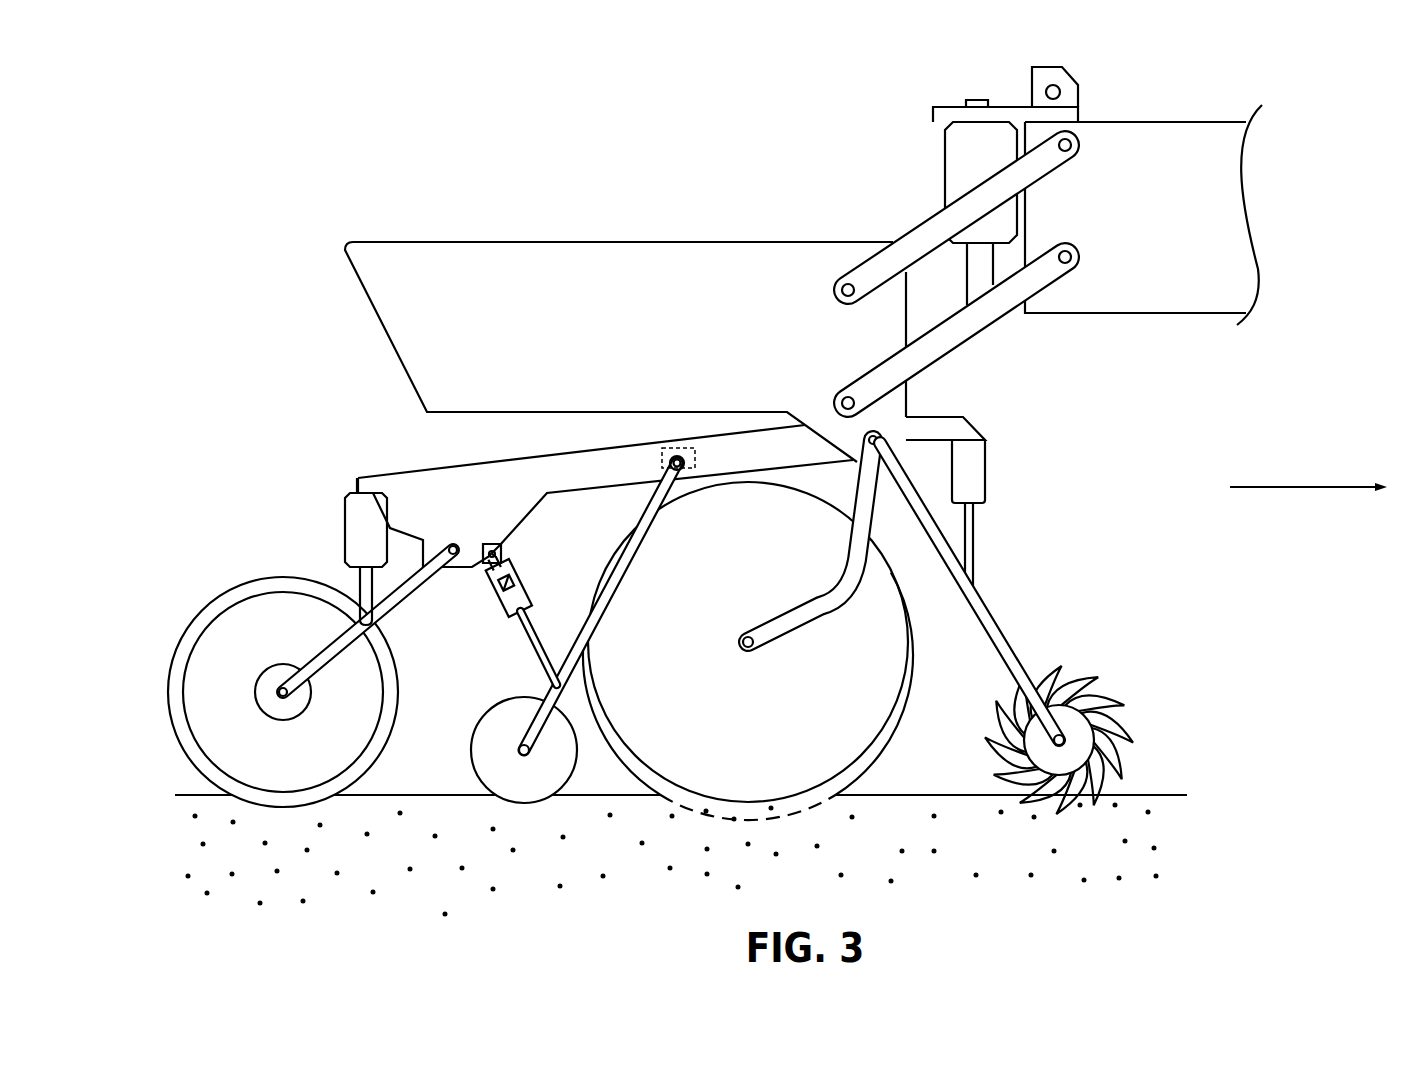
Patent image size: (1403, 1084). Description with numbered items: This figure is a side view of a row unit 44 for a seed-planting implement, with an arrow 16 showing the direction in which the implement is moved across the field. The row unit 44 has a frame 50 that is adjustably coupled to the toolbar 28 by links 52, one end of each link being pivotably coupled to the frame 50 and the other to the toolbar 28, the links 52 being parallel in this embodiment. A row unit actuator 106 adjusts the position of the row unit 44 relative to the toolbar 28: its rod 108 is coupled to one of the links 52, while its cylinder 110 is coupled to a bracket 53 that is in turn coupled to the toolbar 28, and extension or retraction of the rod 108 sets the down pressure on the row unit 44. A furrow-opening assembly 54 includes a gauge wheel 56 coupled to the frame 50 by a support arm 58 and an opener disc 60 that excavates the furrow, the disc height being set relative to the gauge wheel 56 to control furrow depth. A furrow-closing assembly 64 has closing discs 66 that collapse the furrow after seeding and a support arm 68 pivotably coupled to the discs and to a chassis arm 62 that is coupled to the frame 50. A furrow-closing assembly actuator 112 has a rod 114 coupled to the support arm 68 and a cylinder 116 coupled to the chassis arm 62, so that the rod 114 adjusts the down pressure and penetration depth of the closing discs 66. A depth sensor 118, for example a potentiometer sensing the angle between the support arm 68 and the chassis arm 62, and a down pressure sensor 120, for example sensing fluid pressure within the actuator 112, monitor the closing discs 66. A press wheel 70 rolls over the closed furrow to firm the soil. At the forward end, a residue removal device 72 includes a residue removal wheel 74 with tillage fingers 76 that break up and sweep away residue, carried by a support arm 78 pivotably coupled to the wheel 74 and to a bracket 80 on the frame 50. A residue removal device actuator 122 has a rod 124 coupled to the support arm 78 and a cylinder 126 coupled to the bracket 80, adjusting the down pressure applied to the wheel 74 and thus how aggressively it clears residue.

The direction of travel 16 is at (1312, 487).
The toolbar 28 is at (1182, 122).
The row unit 44 is at (378, 147).
The frame 50 is at (628, 242).
The links 52 is at (1050, 170).
The bracket 53 is at (1012, 102).
The furrow-opening assembly 54 is at (774, 669).
The gauge wheel 56 is at (908, 606).
The support arm 58 is at (795, 640).
The opener disc 60 is at (687, 812).
The chassis arm 62 is at (392, 470).
The furrow-closing assembly 64 is at (549, 610).
The closing discs 66 is at (472, 766).
The support arm 68 is at (647, 500).
The press wheel 70 is at (176, 692).
The residue removal device 72 is at (1030, 628).
The residue removal wheel 74 is at (1087, 745).
The fingers 76 is at (1108, 698).
The support arm 78 is at (998, 643).
The bracket 80 is at (952, 416).
The row unit actuator 106 is at (971, 174).
The rod 108 is at (966, 270).
The cylinder 110 is at (943, 142).
The furrow-closing assembly actuator 112 is at (525, 645).
The rod 114 is at (538, 636).
The cylinder 116 is at (521, 582).
The depth sensor 118 is at (676, 446).
The down pressure sensor 120 is at (514, 573).
The residue removal device actuator 122 is at (1015, 482).
The rod 124 is at (975, 540).
The cylinder 126 is at (987, 474).